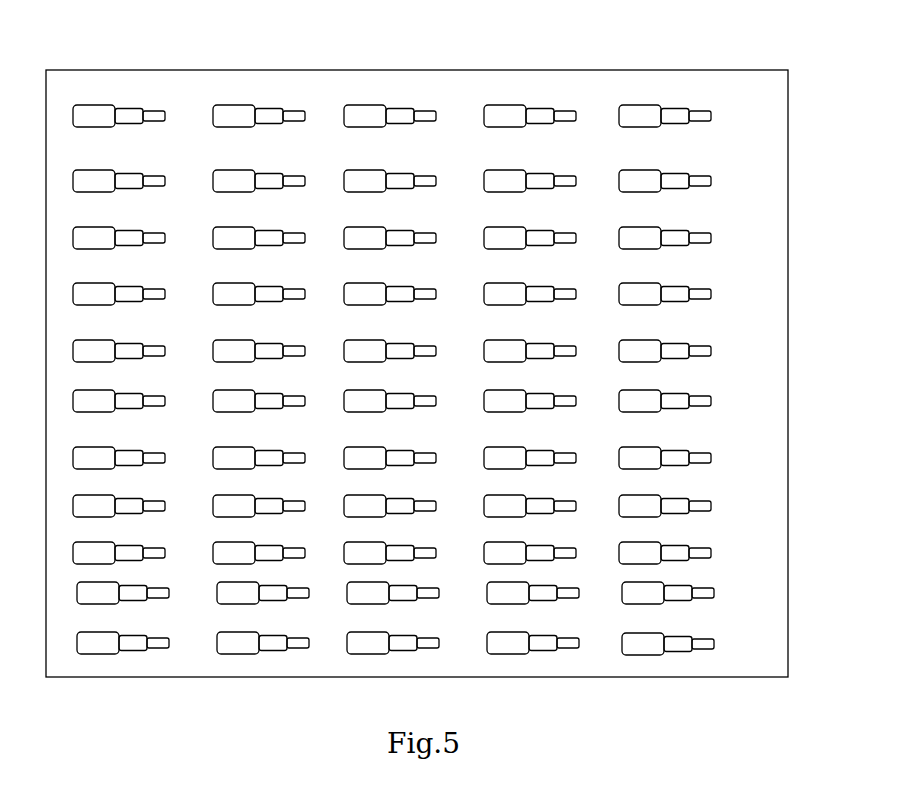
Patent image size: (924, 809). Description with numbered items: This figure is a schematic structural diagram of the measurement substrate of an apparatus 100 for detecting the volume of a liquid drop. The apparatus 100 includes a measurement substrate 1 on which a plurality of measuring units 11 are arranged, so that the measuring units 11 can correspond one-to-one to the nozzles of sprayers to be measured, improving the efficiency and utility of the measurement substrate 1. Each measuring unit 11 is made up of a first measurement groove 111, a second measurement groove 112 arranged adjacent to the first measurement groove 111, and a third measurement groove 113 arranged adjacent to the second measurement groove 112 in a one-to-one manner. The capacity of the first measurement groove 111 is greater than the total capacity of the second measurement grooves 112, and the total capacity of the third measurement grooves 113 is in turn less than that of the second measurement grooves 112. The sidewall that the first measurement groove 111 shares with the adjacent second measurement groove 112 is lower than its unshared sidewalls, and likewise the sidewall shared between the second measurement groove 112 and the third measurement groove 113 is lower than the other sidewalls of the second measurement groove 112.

The apparatus for detecting the volume of a liquid drop 100 is at (694, 30).
The measurement substrate 1 is at (260, 83).
The measuring unit 11 is at (164, 70).
The first measurement groove 111 is at (105, 100).
The second measurement groove 112 is at (140, 100).
The third measurement groove 113 is at (150, 118).